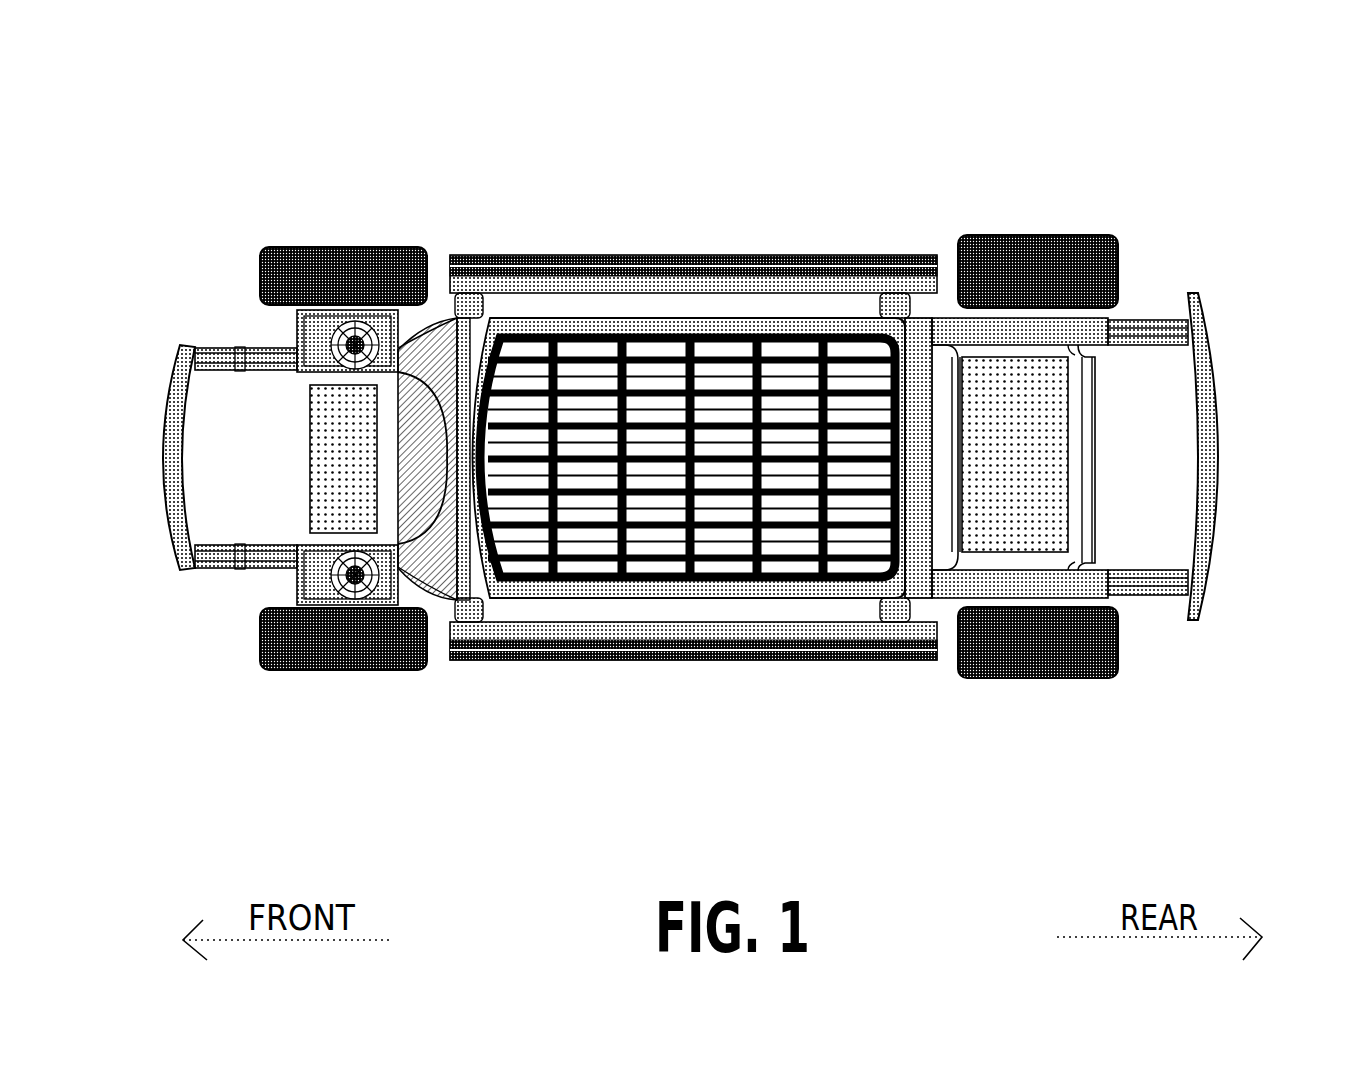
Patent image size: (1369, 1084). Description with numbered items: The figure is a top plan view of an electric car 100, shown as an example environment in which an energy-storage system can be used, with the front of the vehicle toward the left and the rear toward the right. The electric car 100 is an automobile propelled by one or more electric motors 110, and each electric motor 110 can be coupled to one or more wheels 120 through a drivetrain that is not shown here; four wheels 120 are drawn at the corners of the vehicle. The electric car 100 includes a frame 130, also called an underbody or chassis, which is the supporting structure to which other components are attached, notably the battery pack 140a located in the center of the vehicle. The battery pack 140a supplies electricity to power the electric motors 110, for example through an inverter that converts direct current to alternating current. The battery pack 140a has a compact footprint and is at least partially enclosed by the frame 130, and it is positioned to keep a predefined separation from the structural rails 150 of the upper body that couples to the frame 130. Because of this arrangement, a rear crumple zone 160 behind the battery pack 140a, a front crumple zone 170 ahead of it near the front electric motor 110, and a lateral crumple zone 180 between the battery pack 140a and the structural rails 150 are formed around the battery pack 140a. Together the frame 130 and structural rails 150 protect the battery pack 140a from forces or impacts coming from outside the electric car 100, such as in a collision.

The electric car 100 is at (308, 118).
The electric motor 110 is at (1068, 520).
The wheels 120 is at (352, 247).
The frame 130 is at (899, 350).
The battery pack 140a is at (705, 580).
The structural rails 150 is at (722, 255).
The rear crumple zone 160 is at (1143, 392).
The front crumple zone 170 is at (297, 510).
The lateral crumple zone 180 is at (566, 310).